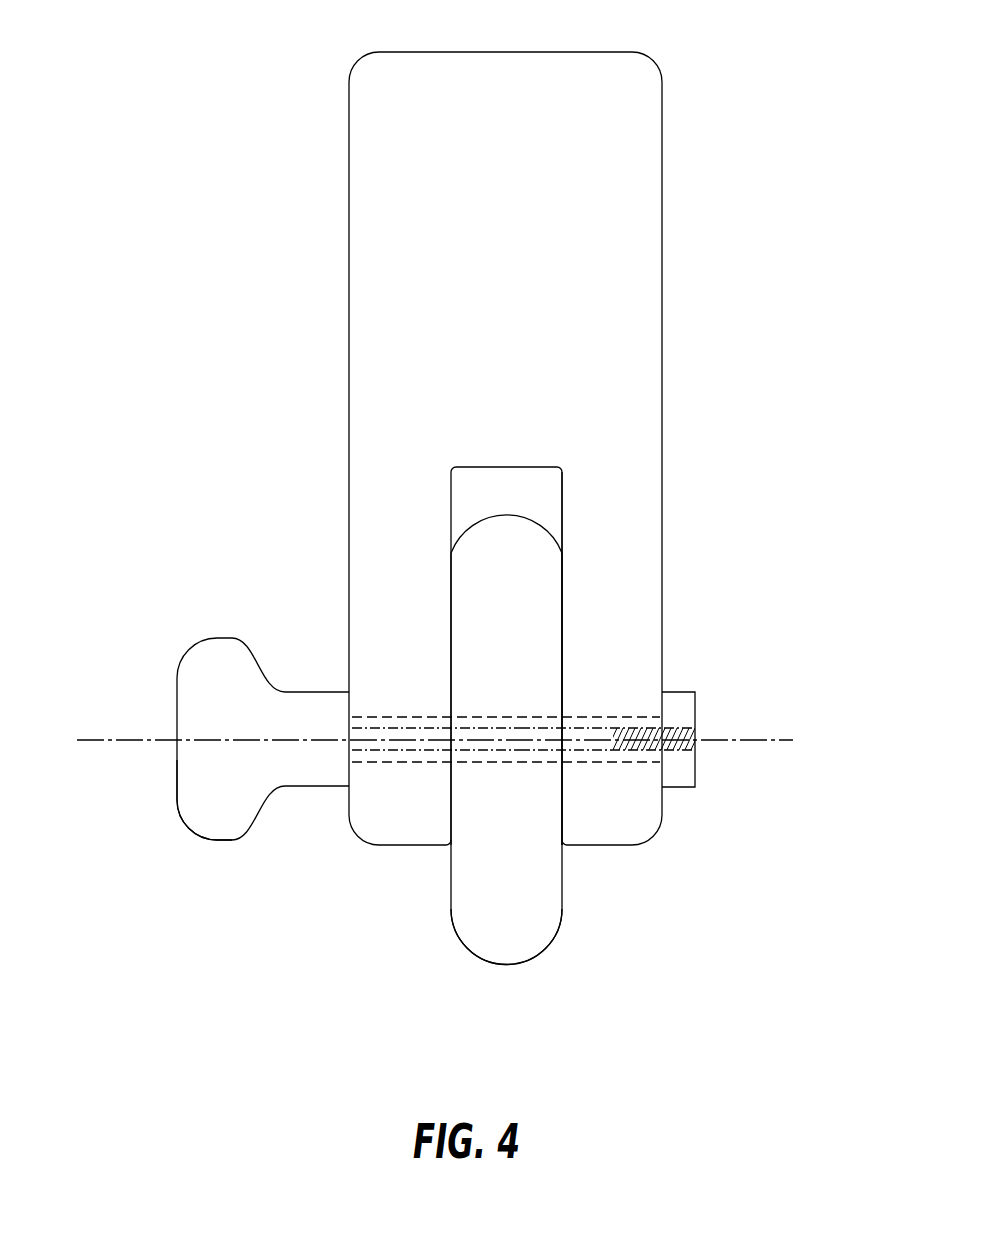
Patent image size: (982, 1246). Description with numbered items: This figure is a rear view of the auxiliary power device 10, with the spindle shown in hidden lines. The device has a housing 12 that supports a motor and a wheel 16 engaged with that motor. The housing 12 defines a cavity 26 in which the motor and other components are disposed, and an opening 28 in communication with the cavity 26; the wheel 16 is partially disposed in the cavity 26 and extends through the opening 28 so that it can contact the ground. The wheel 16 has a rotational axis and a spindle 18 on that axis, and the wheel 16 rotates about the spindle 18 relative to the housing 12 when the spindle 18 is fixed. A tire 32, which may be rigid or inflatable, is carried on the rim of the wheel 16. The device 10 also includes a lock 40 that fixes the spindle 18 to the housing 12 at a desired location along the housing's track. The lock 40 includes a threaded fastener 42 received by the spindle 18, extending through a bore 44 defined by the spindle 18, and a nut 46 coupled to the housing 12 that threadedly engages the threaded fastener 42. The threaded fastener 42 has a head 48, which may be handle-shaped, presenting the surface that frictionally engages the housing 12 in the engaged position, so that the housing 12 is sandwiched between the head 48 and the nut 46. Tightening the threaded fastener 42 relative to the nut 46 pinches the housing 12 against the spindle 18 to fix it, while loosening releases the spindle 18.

The auxiliary power device 10 is at (214, 55).
The housing 12 is at (663, 105).
The wheel 16 is at (547, 962).
The spindle 18 is at (587, 717).
The cavity 26 is at (478, 496).
The opening 28 is at (575, 508).
The tire 32 is at (480, 925).
The lock 40 is at (299, 667).
The threaded fastener 42 is at (405, 750).
The bore 44 is at (618, 753).
The nut 46 is at (695, 707).
The head 48 is at (214, 841).